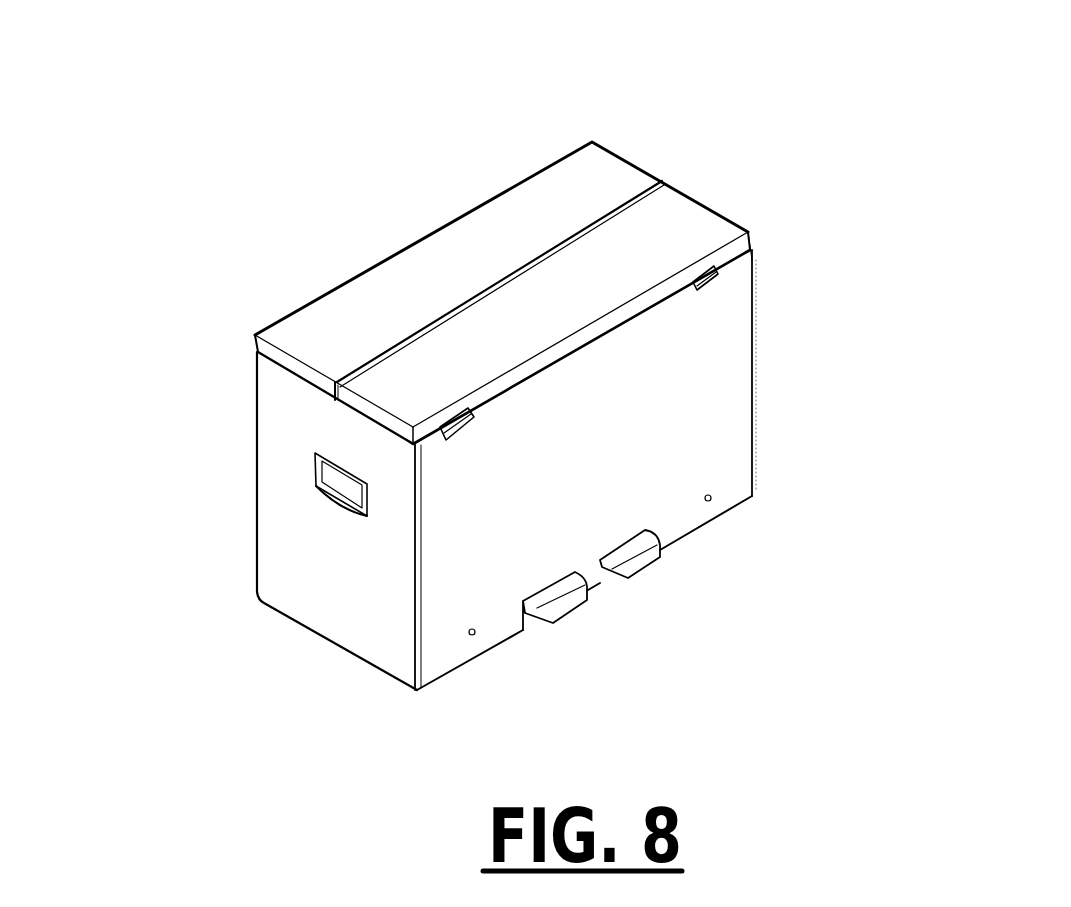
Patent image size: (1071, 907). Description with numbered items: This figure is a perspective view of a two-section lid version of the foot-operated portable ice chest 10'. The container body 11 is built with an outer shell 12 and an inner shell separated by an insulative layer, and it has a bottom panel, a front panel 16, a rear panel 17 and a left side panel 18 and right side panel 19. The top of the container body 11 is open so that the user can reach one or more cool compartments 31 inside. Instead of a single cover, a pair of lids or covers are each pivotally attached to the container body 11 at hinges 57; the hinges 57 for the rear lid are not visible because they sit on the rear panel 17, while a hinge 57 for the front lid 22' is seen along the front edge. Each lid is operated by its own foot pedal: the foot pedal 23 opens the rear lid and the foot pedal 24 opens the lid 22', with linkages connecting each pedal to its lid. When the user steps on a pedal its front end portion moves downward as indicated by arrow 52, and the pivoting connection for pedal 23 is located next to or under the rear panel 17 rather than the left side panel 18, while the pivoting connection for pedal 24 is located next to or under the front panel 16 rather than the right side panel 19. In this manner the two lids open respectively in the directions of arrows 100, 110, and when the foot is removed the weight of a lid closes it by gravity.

The portable ice chest 10' is at (402, 284).
The container body 11 is at (727, 457).
The outer shell 12 is at (318, 607).
The front panel 16 is at (592, 478).
The rear panel 17 is at (280, 295).
The left side panel 18 is at (334, 566).
The right side panel 19 is at (764, 248).
The lid 22' is at (583, 304).
The foot pedal 23 is at (523, 632).
The foot pedal 24 is at (657, 555).
The cool compartment 31 is at (518, 248).
The arrow 52 is at (645, 577).
The hinge 57 is at (710, 287).
The arrow 100 is at (641, 153).
The arrow 110 is at (832, 155).